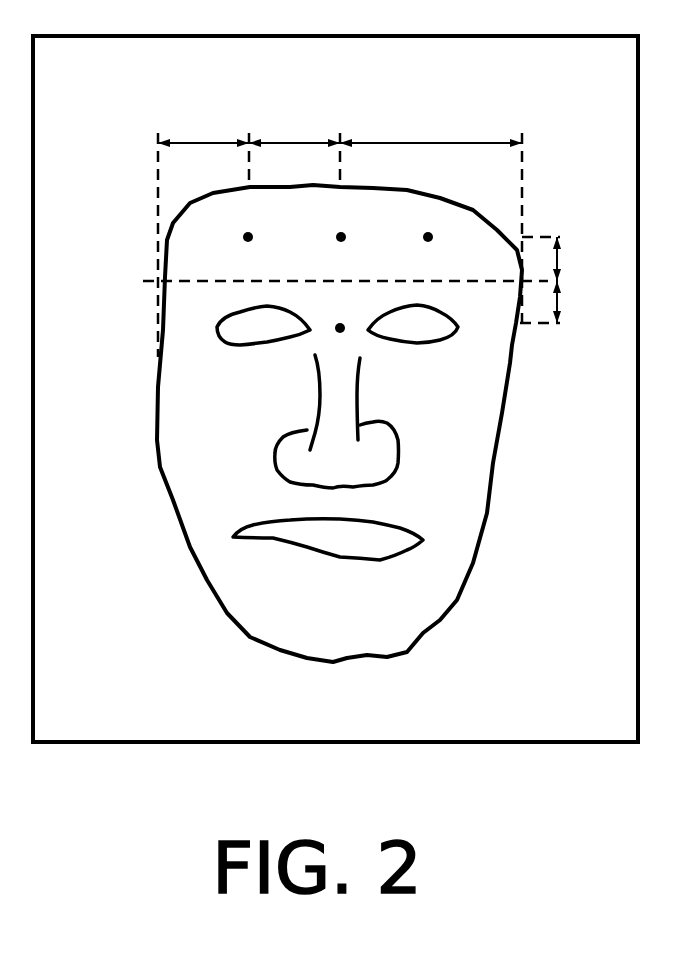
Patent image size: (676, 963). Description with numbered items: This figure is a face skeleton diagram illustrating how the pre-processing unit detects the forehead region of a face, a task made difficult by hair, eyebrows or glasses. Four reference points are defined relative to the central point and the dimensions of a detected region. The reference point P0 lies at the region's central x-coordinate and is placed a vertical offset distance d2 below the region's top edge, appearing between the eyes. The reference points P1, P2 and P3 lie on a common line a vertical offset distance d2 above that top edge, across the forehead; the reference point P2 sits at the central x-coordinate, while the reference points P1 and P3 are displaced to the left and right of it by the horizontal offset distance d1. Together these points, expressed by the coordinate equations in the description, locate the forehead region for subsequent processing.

The reference point P0 is at (348, 308).
The reference point P1 is at (272, 255).
The reference point P2 is at (364, 255).
The reference point P3 is at (454, 255).
The horizontal offset distance d1 is at (340, 120).
The vertical offset distance d2 is at (581, 285).